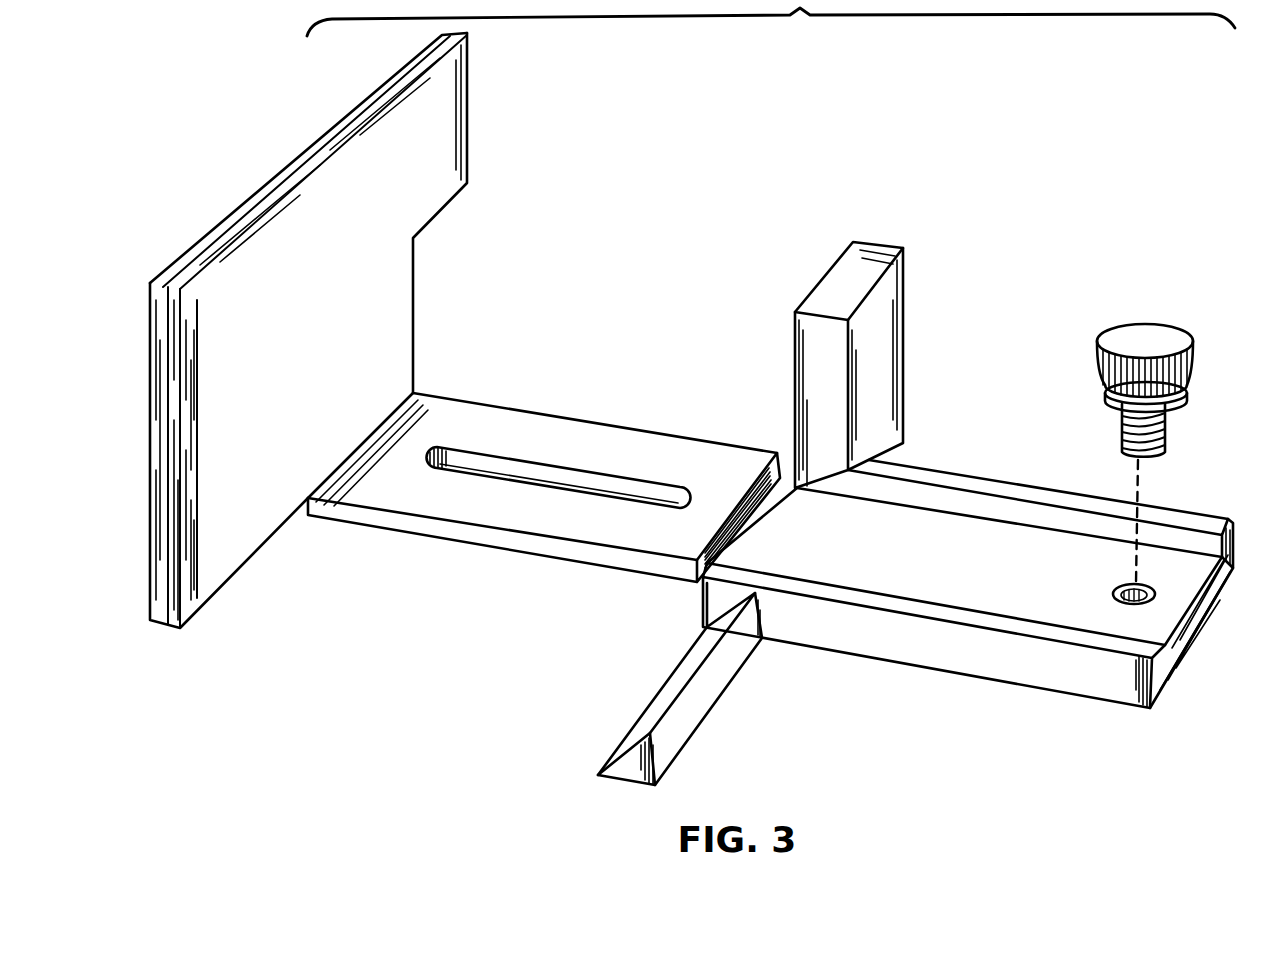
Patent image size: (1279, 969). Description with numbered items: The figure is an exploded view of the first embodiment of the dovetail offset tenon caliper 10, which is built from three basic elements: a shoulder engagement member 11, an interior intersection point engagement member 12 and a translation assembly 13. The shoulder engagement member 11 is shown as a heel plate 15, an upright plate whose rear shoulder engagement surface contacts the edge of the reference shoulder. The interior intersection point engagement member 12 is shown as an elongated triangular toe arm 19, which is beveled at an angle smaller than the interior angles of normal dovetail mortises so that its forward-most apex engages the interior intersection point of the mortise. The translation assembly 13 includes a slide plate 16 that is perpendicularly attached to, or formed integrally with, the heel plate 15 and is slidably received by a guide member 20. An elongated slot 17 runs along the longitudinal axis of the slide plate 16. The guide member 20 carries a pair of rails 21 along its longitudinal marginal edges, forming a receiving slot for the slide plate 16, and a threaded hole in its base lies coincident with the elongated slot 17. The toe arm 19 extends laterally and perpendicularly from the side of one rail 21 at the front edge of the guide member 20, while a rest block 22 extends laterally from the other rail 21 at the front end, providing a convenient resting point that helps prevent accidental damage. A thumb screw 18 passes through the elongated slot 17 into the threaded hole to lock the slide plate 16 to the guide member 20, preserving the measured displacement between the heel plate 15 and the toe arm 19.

The dovetail offset tenon caliper 10 is at (708, 266).
The shoulder engagement member 11 is at (466, 132).
The interior intersection point engagement member 12 is at (617, 742).
The translation assembly 13 is at (892, 570).
The heel plate 15 is at (293, 163).
The slide plate 16 is at (541, 433).
The elongated slot 17 is at (487, 466).
The thumb screw 18 is at (1147, 333).
The toe arm 19 is at (692, 718).
The guide member 20 is at (1180, 652).
The rails 21 is at (1221, 517).
The rest block 22 is at (906, 278).